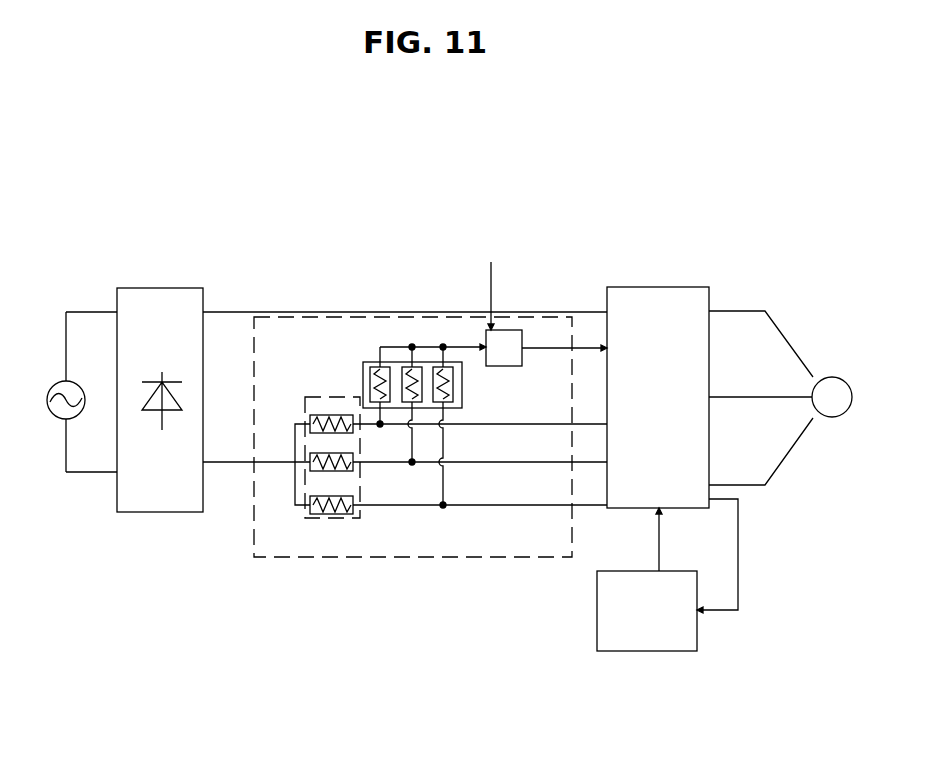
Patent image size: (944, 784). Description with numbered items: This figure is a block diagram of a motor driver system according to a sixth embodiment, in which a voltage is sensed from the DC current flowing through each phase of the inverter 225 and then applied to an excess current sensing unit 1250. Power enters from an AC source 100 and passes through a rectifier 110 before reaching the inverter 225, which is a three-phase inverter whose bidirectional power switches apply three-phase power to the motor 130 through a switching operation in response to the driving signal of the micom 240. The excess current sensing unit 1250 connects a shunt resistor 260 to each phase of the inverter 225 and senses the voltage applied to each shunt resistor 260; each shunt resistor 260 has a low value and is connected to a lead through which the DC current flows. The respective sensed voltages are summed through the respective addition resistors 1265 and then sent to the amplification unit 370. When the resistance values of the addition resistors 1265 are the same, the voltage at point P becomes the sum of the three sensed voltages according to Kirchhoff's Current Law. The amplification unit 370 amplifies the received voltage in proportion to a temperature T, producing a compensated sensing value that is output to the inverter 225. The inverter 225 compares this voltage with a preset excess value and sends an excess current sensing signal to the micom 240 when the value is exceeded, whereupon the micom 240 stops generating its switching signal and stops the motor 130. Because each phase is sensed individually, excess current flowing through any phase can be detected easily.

The AC power source 100 is at (66, 381).
The rectifier 110 is at (160, 288).
The excess current sensing unit 1250 is at (366, 557).
The shunt resistor 260 is at (318, 415).
The addition resistors 1265 is at (436, 368).
The amplification unit 370 is at (510, 330).
The inverter 225 is at (677, 287).
The motor 130 is at (836, 378).
The micom 240 is at (648, 651).